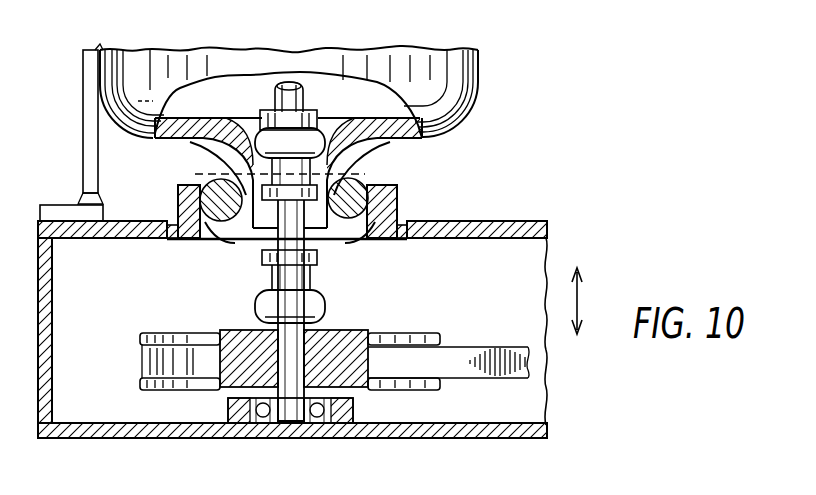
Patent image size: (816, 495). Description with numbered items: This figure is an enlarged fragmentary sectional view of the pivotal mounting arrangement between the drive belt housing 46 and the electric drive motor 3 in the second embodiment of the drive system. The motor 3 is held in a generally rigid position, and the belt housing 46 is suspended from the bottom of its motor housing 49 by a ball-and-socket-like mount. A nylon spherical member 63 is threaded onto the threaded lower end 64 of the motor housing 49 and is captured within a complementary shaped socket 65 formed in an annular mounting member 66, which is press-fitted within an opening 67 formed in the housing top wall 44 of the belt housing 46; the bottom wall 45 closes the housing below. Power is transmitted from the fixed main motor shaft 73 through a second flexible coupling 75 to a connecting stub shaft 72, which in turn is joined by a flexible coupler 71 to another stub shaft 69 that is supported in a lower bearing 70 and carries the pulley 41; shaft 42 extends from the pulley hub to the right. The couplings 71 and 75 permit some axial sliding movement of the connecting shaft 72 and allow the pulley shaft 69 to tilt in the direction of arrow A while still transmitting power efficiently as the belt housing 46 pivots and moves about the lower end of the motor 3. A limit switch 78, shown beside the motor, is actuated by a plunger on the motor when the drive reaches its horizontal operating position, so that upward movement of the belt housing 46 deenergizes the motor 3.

The motor 3 is at (160, 58).
The motor housing 49 is at (445, 95).
The main motor shaft 73 is at (300, 100).
The second flexible coupling 75 is at (267, 130).
The nylon spherical member 63 is at (217, 176).
The socket 65 is at (352, 183).
The threaded lower end 64 is at (239, 236).
The annular mounting member 66 is at (196, 228).
The opening 67 is at (403, 222).
The stub shaft 72 is at (294, 207).
The flexible coupler 71 is at (312, 301).
The drive shaft 42 is at (513, 365).
The pulley 41 is at (425, 390).
The lower bearing 70 is at (260, 420).
The stub shaft 69 is at (288, 412).
The limit switch 78 is at (76, 200).
The housing top wall 44 is at (530, 221).
The housing bottom wall 45 is at (125, 440).
The belt housing 46 is at (535, 262).
The arrow A is at (578, 295).